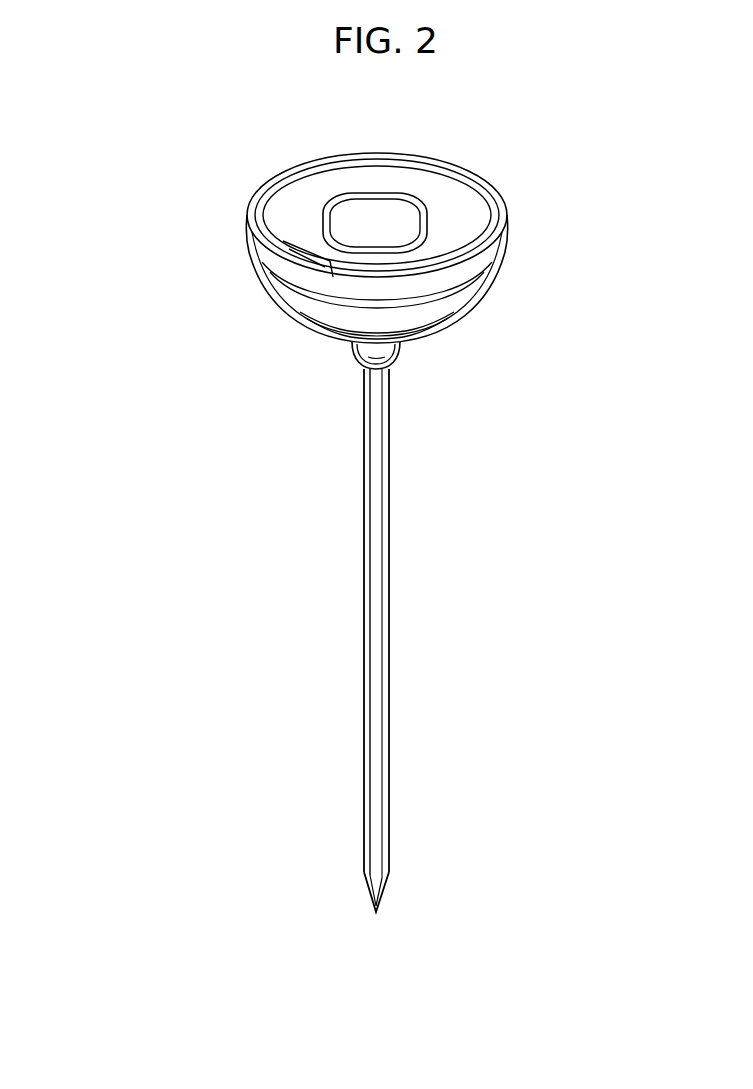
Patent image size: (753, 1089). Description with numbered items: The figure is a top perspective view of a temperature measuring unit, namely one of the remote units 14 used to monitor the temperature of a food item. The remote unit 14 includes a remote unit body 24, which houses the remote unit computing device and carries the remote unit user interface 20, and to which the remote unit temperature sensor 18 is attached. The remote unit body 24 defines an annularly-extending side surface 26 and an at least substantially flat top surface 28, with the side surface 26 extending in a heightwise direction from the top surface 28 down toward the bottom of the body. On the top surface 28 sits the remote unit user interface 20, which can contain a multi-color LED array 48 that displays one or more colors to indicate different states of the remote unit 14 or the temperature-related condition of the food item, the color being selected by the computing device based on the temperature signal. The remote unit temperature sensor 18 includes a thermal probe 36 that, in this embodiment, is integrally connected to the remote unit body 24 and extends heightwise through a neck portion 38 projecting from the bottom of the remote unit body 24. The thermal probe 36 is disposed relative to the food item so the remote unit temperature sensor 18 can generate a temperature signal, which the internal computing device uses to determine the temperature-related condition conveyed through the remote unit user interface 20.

The remote unit 14 is at (144, 153).
The remote unit body 24 is at (248, 247).
The top surface 28 is at (332, 186).
The multi-color LED array 48 is at (387, 195).
The remote unit user interface 20 is at (405, 215).
The side surface 26 is at (468, 302).
The neck portion 38 is at (402, 353).
The thermal probe 36 is at (390, 631).
The remote unit temperature sensor 18 is at (385, 904).